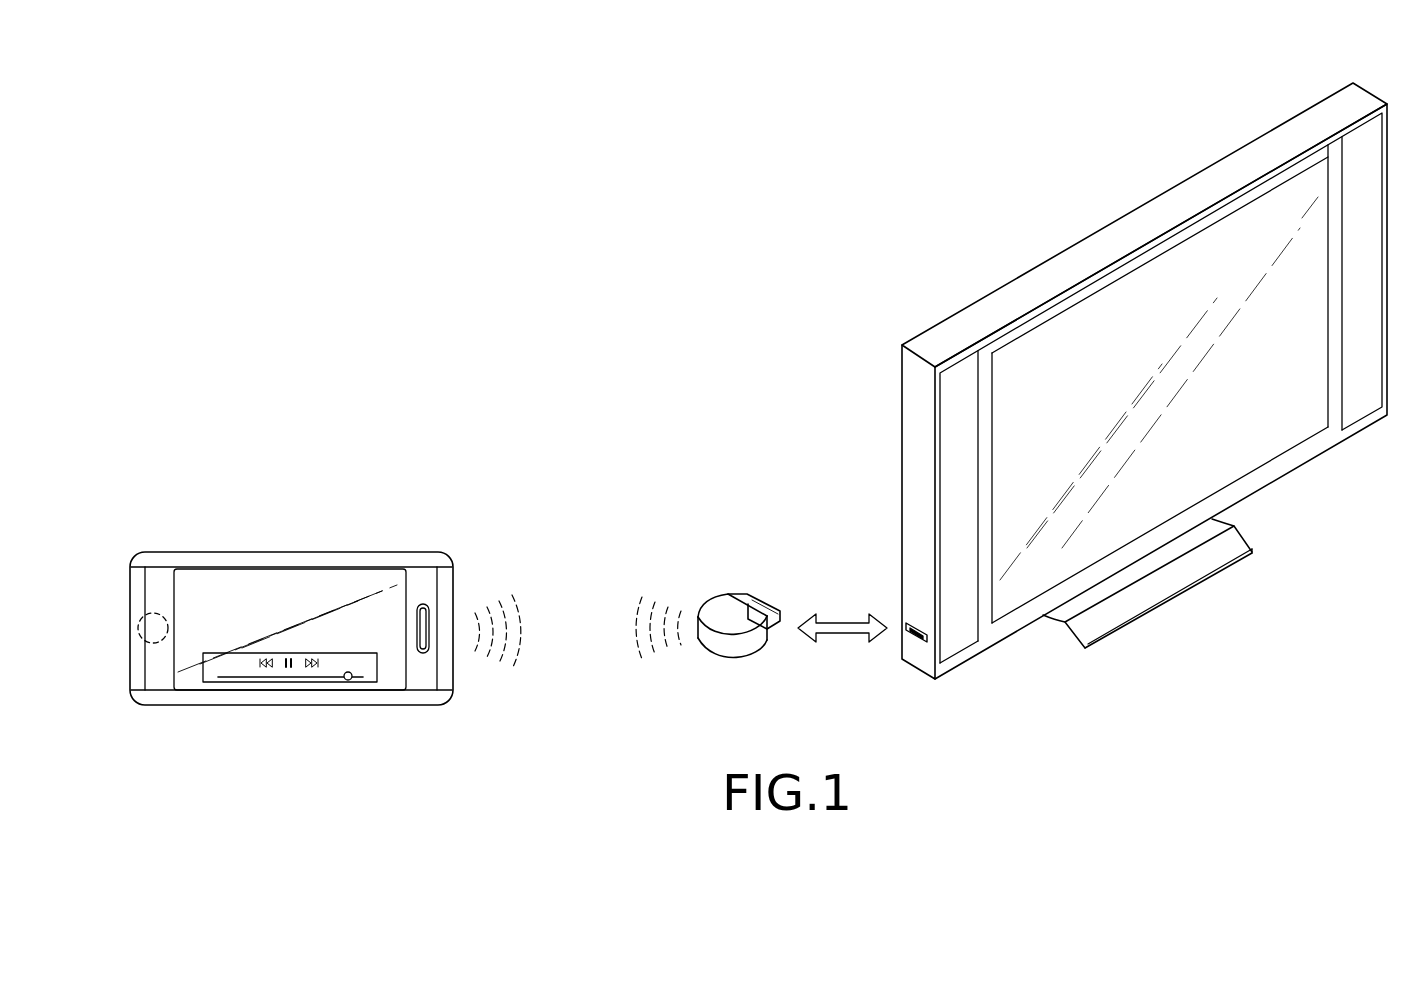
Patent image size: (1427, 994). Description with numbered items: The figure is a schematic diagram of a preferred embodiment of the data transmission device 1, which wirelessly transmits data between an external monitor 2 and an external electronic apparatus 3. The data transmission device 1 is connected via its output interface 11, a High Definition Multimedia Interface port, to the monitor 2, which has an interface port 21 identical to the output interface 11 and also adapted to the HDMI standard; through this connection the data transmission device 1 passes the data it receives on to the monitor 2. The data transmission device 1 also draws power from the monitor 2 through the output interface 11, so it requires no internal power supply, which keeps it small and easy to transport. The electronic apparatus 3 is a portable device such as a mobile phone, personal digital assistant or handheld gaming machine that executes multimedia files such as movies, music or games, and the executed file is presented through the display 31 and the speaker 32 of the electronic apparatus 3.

The data transmission device 1 is at (717, 605).
The output interface 11 is at (760, 603).
The monitor 2 is at (1257, 443).
The interface port 21 is at (906, 634).
The electronic apparatus 3 is at (238, 553).
The display 31 is at (298, 590).
The speaker 32 is at (152, 628).